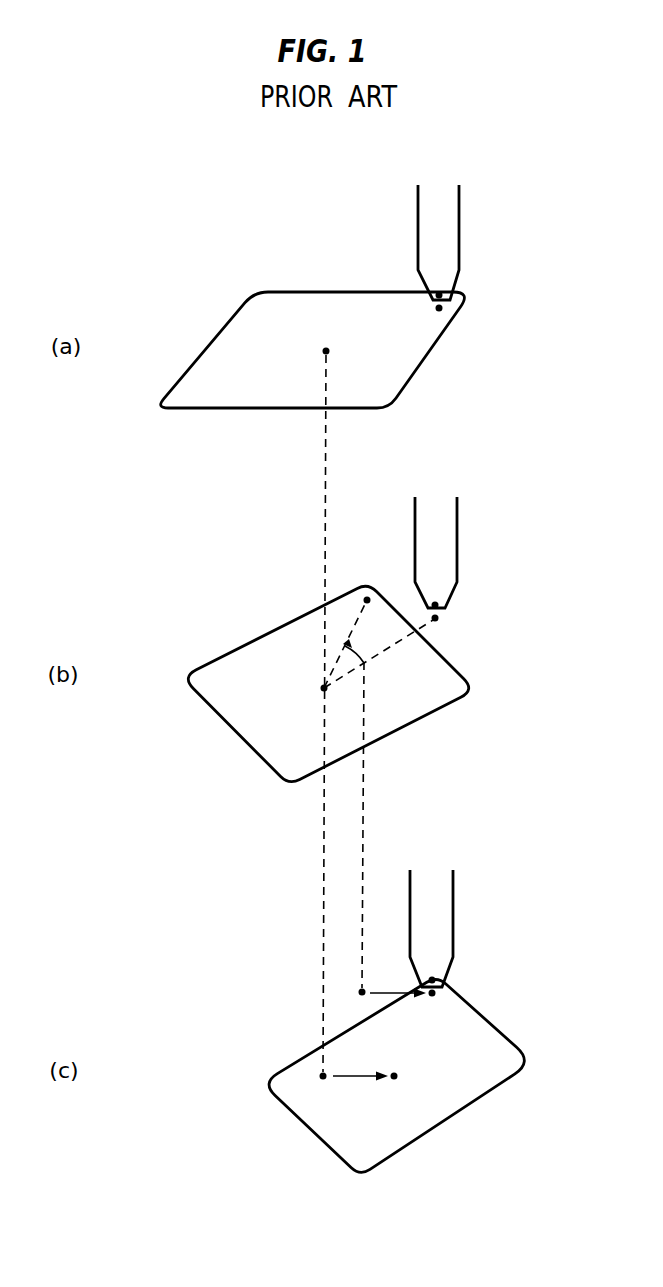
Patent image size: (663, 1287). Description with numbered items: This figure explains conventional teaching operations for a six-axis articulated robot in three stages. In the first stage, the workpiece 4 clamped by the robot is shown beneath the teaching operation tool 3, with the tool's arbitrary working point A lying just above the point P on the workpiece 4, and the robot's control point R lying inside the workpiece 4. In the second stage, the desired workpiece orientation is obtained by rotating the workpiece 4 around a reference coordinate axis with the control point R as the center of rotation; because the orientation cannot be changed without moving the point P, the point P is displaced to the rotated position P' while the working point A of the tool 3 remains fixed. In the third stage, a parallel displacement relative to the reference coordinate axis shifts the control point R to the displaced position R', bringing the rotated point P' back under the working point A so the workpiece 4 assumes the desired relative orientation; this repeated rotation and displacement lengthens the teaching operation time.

The teaching operation tool 3 is at (460, 229).
The workpiece 4 is at (217, 345).
The working point A is at (435, 625).
The point on the workpiece P is at (436, 665).
The control point R is at (316, 724).
The rotated processing point P' is at (378, 802).
The shifted rotation center R' is at (369, 1089).